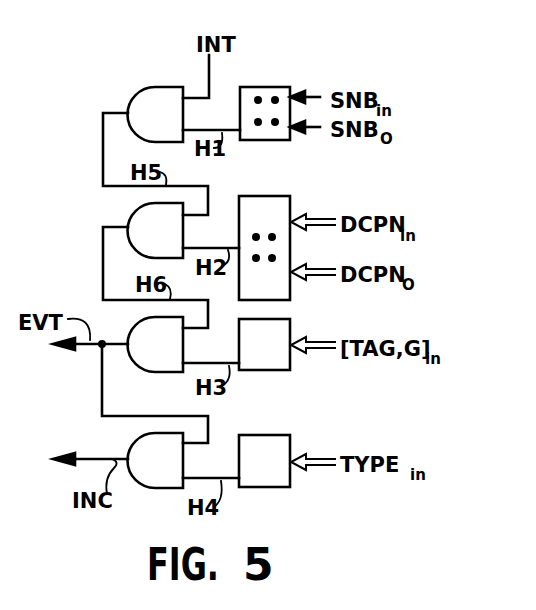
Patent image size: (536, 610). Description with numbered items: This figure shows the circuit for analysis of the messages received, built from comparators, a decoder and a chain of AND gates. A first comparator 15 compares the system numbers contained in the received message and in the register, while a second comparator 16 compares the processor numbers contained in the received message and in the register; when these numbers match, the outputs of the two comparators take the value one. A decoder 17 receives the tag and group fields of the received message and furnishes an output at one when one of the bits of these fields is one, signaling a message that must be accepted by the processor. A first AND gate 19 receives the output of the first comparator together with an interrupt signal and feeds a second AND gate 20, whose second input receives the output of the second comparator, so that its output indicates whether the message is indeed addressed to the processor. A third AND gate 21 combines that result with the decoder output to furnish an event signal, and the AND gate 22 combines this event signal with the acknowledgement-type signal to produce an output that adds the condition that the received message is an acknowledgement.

The first comparator 15 is at (263, 87).
The second comparator 16 is at (291, 200).
The decoder 17 is at (291, 325).
The first AND gate 19 is at (145, 95).
The second AND gate 20 is at (138, 225).
The third AND gate 21 is at (146, 328).
The AND gate 22 is at (142, 452).